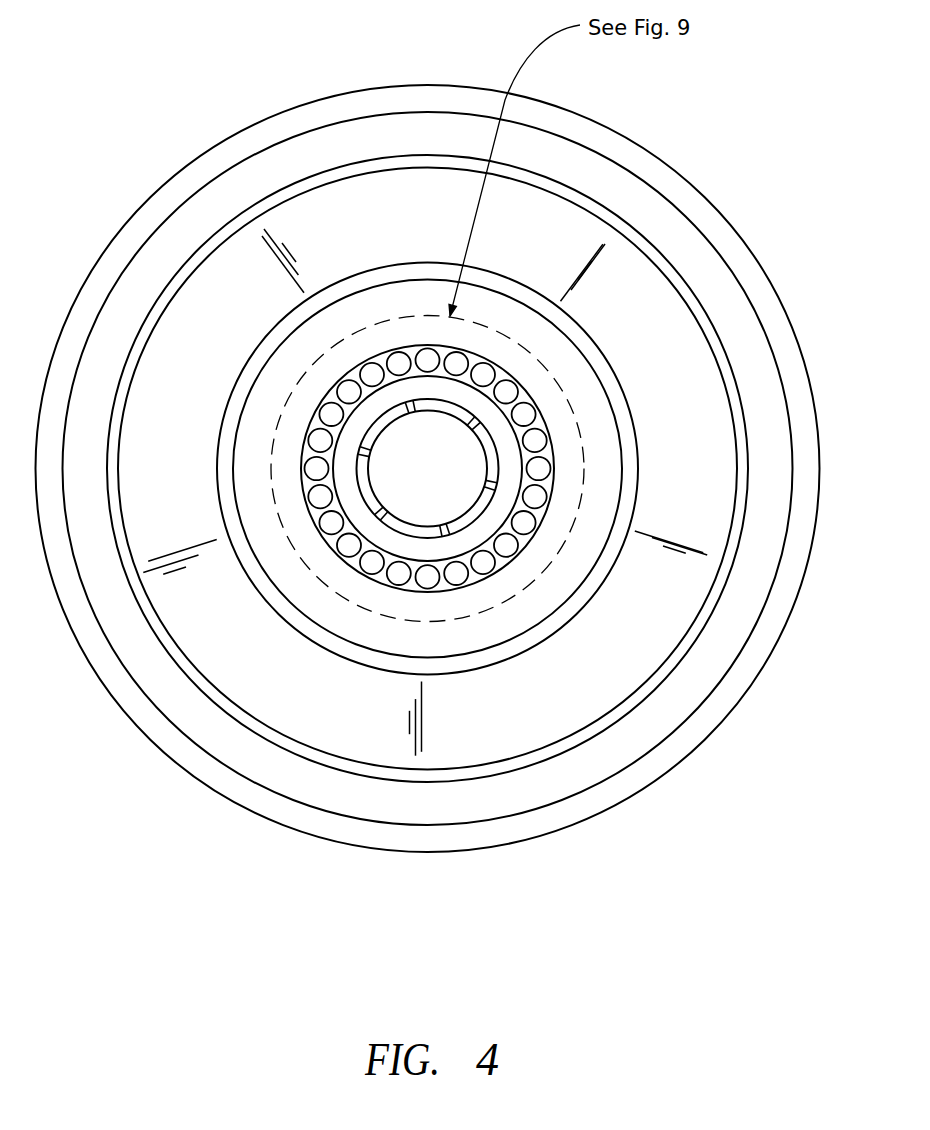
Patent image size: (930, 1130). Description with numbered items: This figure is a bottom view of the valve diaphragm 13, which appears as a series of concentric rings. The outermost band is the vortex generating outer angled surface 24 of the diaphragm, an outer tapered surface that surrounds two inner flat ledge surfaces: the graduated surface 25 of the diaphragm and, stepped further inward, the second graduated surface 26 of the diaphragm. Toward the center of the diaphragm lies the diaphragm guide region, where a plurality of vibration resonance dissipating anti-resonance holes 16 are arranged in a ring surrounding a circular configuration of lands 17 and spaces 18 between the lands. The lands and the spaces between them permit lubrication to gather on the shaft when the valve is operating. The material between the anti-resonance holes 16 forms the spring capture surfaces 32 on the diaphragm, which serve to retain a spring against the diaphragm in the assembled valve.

The valve diaphragm 13 is at (424, 70).
The anti-resonance holes 16 is at (426, 582).
The lands 17 is at (462, 406).
The spaces between lands 18 is at (410, 403).
The vortex generating outer angled surface of diaphragm 24 is at (207, 167).
The graduated surface of diaphragm 25 is at (595, 728).
The graduated surface of diaphragm 26 is at (273, 605).
The spring capture on diaphragm 32 is at (555, 448).